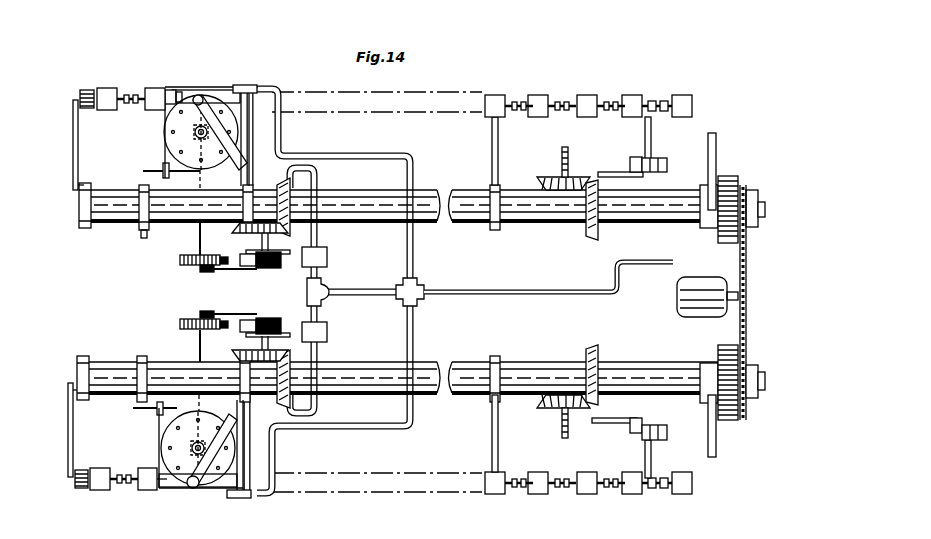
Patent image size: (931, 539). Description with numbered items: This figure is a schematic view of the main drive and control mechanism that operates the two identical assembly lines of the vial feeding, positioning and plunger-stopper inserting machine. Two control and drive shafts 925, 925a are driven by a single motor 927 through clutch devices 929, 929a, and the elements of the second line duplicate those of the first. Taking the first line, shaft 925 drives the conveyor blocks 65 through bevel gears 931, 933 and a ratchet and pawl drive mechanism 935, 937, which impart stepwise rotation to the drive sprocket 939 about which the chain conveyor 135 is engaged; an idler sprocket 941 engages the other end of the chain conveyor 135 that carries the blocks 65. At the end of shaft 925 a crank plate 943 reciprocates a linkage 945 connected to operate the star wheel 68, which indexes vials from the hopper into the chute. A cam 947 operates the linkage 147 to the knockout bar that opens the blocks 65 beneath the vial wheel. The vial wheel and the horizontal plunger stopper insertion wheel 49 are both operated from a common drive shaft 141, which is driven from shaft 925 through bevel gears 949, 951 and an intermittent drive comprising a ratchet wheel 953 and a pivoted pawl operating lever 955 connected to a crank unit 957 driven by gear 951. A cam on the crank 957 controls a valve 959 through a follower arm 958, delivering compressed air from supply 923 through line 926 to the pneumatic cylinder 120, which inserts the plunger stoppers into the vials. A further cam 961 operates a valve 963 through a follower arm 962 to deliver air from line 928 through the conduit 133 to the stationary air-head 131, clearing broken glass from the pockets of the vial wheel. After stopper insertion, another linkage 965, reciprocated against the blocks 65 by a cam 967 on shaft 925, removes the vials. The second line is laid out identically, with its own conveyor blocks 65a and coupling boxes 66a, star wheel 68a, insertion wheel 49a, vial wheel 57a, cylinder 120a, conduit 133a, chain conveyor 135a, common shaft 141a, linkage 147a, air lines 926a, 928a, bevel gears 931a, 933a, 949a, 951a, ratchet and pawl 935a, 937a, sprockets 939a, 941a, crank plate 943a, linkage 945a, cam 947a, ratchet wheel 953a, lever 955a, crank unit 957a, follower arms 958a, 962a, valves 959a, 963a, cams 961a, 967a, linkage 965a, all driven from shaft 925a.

The horizontal plunger stopper insertion wheel 49 is at (175, 451).
The horizontal plunger stopper insertion wheel 49a is at (182, 138).
The vial wheel 57a is at (171, 88).
The conveyor blocks 65 is at (100, 468).
The conveyor blocks 65a is at (107, 88).
The coupling boxes 66a is at (543, 95).
The star wheel 68 is at (75, 483).
The star wheel 68a is at (84, 90).
The pneumatic cylinder 120 is at (186, 492).
The pneumatic cylinder 120a is at (207, 95).
The stationary air-head 131 is at (163, 494).
The conduit 133 is at (198, 488).
The conduit 133a is at (194, 95).
The chain conveyor 135 is at (606, 494).
The chain conveyor 135a is at (183, 88).
The common drive shaft 141 is at (199, 356).
The common drive shaft 141a is at (200, 180).
The linkage 147 is at (136, 402).
The linkage 147a is at (147, 181).
The compressed air supply 923 is at (675, 262).
The control and drive shaft 925 is at (518, 376).
The control and drive shaft 925a is at (537, 218).
The air line 926 is at (320, 350).
The air line 926a is at (318, 230).
The motor 927 is at (677, 302).
The air line 928 is at (396, 428).
The air line 928a is at (343, 158).
The clutch device 929 is at (727, 423).
The clutch device 929a is at (733, 177).
The bevel gear 931 is at (597, 361).
The bevel gear 931a is at (600, 229).
The bevel gear 933 is at (547, 417).
The bevel gear 933a is at (553, 181).
The ratchet 935 is at (650, 427).
The ratchet 935a is at (652, 163).
The pawl 937 is at (620, 418).
The pawl 937a is at (641, 173).
The drive sprocket 939 is at (654, 477).
The drive sprocket 939a is at (656, 97).
The idler sprocket 941 is at (125, 488).
The idler sprocket 941a is at (132, 95).
The crank plate 943 is at (82, 368).
The crank plate 943a is at (84, 186).
The linkage 945 is at (72, 405).
The linkage 945a is at (75, 140).
The cam 947 is at (147, 353).
The cam 947a is at (143, 229).
The bevel gear 949 is at (303, 379).
The bevel gear 949a is at (309, 207).
The bevel gear 951 is at (241, 350).
The bevel gear 951a is at (258, 238).
The ratchet wheel 953 is at (182, 322).
The ratchet wheel 953a is at (182, 261).
The pivoted pawl operating lever 955 is at (224, 312).
The pivoted pawl operating lever 955a is at (228, 273).
The crank unit 957 is at (263, 320).
The crank unit 957a is at (270, 269).
The follower arm 958 is at (270, 342).
The follower arm 958a is at (273, 243).
The valve 959 is at (318, 332).
The valve 959a is at (328, 254).
The cam 961 is at (262, 377).
The cam 961a is at (262, 205).
The follower arm 962 is at (254, 445).
The follower arm 962a is at (256, 140).
The valve 963 is at (233, 498).
The valve 963a is at (251, 85).
The linkage 965 is at (492, 428).
The linkage 965a is at (498, 150).
The cam 967 is at (490, 362).
The cam 967a is at (493, 228).